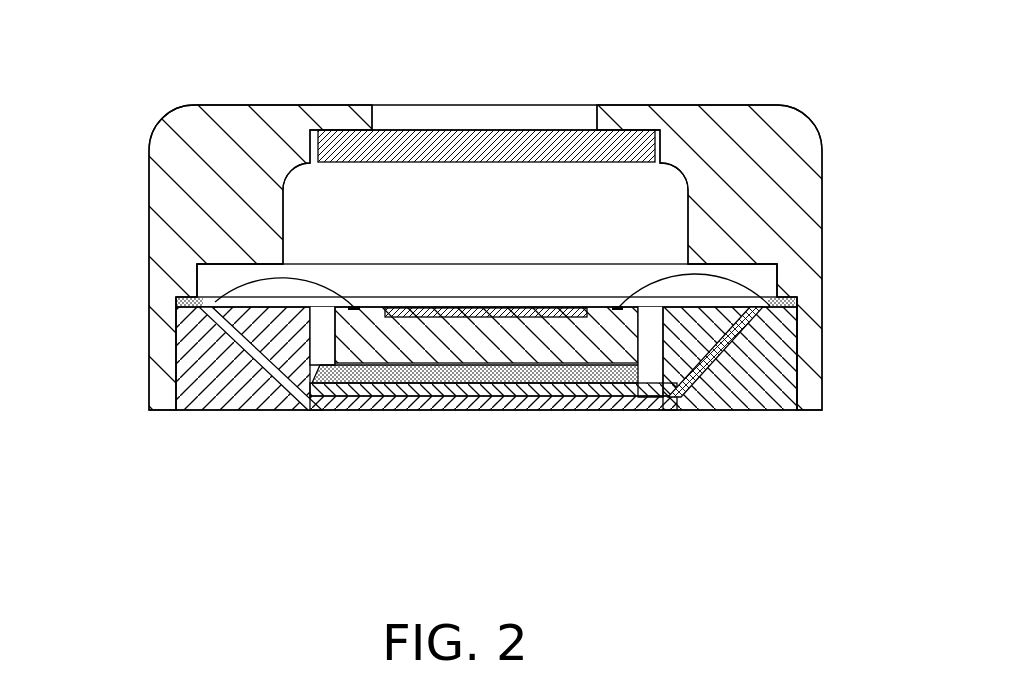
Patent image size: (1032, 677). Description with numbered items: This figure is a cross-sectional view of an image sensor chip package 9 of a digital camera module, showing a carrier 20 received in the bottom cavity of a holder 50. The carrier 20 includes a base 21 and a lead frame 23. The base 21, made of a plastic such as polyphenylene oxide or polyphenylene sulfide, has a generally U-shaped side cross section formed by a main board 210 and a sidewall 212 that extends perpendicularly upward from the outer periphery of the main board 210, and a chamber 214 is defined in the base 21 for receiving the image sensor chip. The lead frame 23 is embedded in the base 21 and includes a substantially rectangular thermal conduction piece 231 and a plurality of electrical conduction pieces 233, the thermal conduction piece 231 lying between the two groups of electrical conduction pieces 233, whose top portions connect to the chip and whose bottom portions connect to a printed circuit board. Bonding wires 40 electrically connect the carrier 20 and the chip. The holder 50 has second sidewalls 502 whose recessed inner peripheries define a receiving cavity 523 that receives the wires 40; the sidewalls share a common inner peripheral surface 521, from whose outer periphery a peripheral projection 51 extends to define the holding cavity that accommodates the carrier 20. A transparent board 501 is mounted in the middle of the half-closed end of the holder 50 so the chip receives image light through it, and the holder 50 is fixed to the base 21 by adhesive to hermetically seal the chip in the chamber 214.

The image sensor chip package 9 is at (378, 47).
The holder 50 is at (794, 100).
The transparent board 501 is at (318, 146).
The second sidewall 502 is at (790, 165).
The peripheral projection 51 is at (812, 378).
The bonding wires 40 is at (777, 272).
The receiving cavity 523 is at (228, 274).
The inner peripheral surface 521 is at (178, 298).
The chamber 214 is at (320, 356).
The sidewall 212 is at (241, 395).
The main board 210 is at (352, 405).
The base 21 is at (360, 478).
The thermal conduction piece 231 is at (537, 398).
The electrical conduction pieces 233 is at (716, 372).
The lead frame 23 is at (747, 471).
The carrier 20 is at (647, 513).